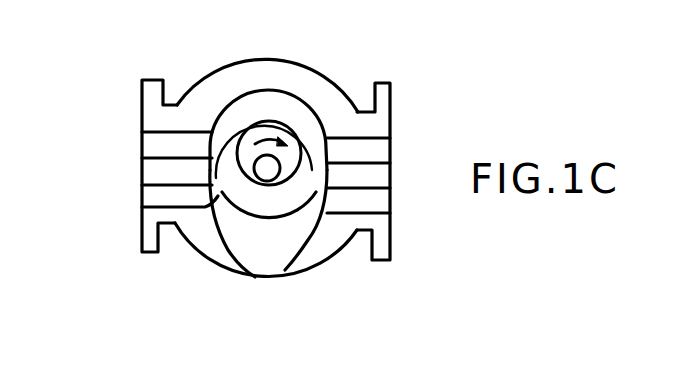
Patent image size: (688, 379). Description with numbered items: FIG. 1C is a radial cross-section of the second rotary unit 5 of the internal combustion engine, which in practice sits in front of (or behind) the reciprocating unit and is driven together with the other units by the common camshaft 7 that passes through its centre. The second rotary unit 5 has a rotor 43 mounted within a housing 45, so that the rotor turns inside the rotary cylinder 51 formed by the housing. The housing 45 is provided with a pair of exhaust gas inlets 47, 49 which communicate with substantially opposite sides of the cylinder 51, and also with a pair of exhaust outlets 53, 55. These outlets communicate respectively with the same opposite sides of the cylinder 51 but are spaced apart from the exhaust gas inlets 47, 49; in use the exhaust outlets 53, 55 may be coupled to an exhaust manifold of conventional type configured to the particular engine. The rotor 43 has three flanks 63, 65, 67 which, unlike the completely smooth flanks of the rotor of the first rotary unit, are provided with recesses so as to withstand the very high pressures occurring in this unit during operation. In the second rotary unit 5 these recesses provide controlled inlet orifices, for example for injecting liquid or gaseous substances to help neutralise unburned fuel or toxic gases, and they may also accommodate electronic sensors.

The second rotary unit 5 is at (300, 277).
The common camshaft 7 is at (264, 173).
The rotor 43 is at (283, 97).
The housing 45 is at (257, 63).
The exhaust gas inlet 47 is at (143, 143).
The exhaust gas inlet 49 is at (380, 205).
The rotary cylinder 51 is at (298, 232).
The exhaust outlet 53 is at (150, 193).
The exhaust outlet 55 is at (380, 147).
The flank 63 is at (308, 113).
The flank 65 is at (232, 108).
The flank 67 is at (240, 273).